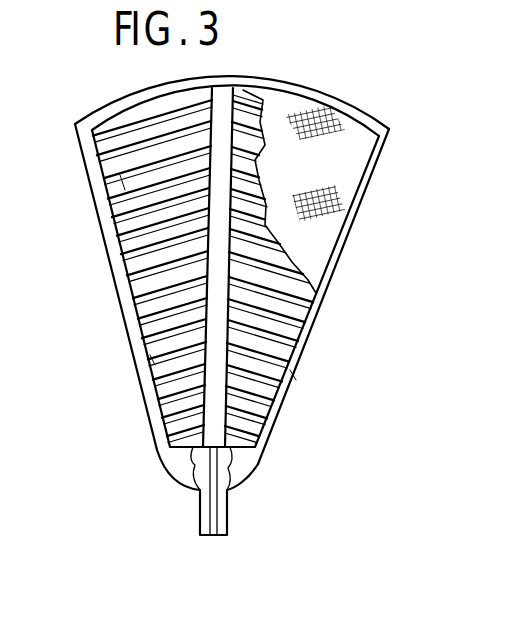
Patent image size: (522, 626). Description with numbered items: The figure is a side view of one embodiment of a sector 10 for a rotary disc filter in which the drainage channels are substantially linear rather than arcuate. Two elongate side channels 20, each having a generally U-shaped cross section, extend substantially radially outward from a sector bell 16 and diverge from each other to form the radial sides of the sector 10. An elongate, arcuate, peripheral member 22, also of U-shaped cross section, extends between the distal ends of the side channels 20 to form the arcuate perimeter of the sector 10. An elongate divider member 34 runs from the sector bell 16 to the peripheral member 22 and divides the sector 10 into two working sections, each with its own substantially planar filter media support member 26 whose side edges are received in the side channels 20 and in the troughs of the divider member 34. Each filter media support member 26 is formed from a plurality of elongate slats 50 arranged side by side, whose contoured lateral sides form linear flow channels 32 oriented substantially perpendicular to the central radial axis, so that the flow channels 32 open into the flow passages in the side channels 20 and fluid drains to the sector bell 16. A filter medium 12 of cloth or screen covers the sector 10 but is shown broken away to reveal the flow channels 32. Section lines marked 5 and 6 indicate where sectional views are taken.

The sector 10 is at (278, 72).
The filter medium 12 is at (360, 200).
The sector bell 16 is at (186, 466).
The side channels 20 is at (110, 247).
The peripheral member 22 is at (150, 93).
The filter media support member 26 is at (166, 142).
The flow channels 32 is at (125, 194).
The divider member 34 is at (228, 274).
The slats 50 is at (255, 200).
The section line 6 is at (90, 143).
The section line 5 is at (95, 305).